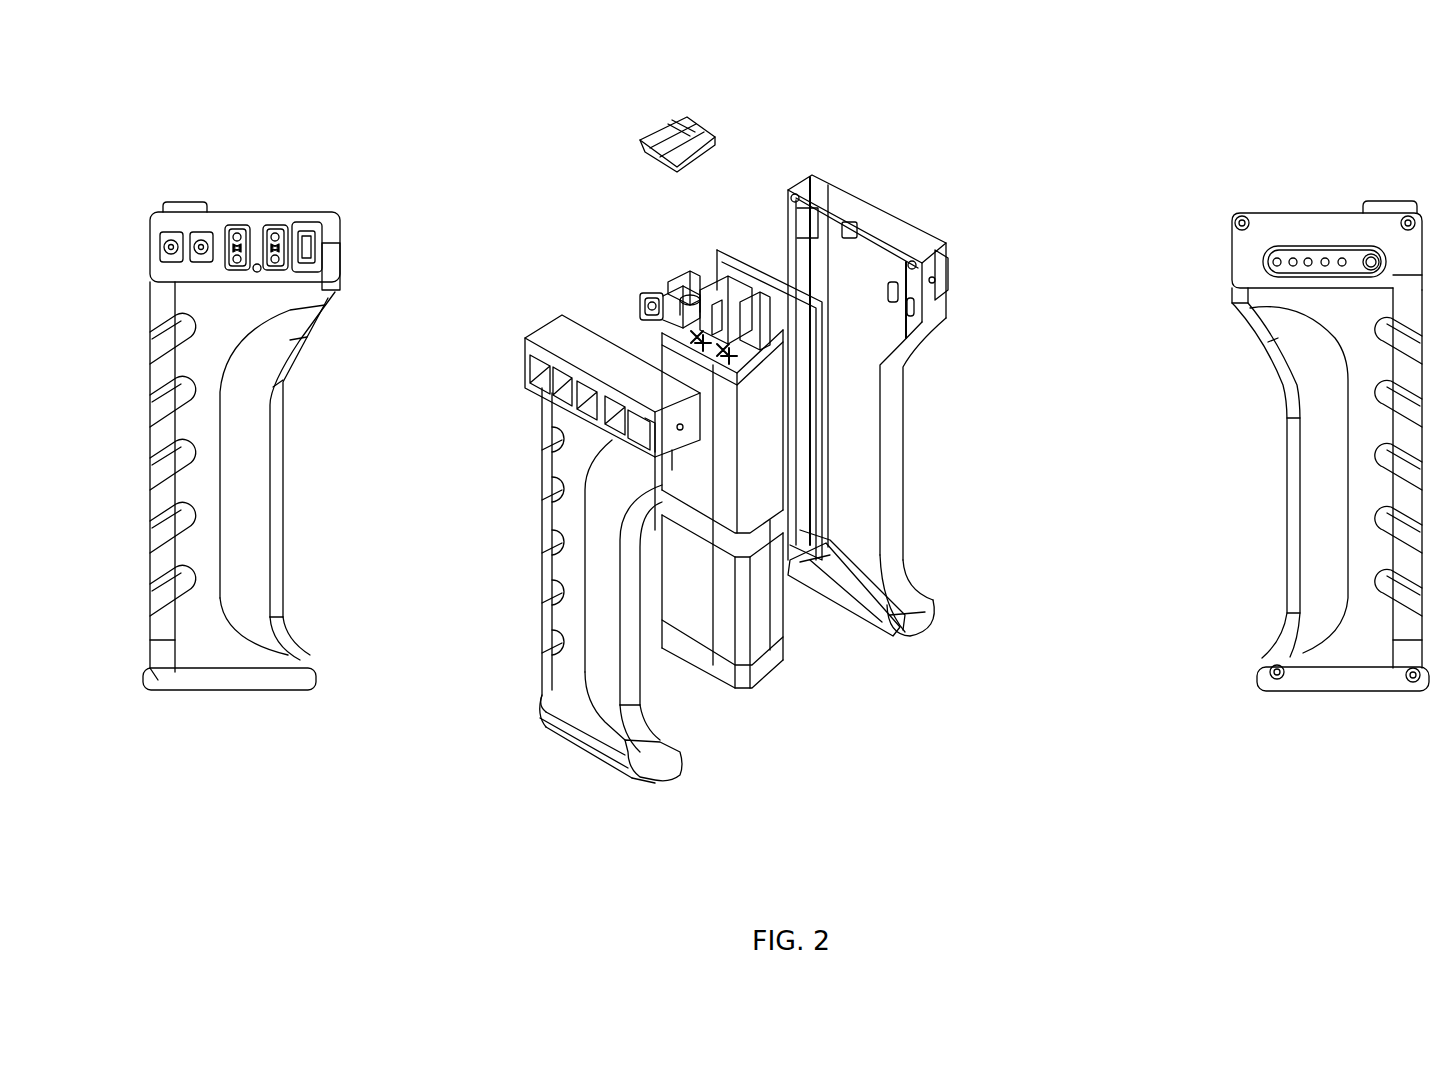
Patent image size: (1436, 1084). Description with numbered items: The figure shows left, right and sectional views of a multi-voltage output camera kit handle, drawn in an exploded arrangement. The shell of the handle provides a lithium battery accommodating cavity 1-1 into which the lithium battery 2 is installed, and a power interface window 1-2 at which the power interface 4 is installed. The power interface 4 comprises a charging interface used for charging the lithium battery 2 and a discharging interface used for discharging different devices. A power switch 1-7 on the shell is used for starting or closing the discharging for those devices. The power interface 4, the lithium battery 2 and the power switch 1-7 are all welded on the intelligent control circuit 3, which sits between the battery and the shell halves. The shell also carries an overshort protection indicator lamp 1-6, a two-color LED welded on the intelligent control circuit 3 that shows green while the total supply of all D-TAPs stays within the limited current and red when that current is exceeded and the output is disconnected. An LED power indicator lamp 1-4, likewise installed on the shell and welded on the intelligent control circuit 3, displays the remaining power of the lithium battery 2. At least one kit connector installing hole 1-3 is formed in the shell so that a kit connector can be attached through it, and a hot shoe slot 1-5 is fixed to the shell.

The lithium battery accommodating cavity 1-1 is at (882, 320).
The power interface window 1-2 is at (212, 237).
The kit connector installing hole 1-3 is at (948, 290).
The LED power indicator lamp 1-4 is at (1263, 252).
The hot shoe slot 1-5 is at (710, 123).
The overshort protection indicator lamp 1-6 is at (258, 272).
The power switch 1-7 is at (1363, 250).
The lithium battery 2 is at (730, 607).
The intelligent control circuit 3 is at (712, 261).
The power interface 4 is at (648, 295).